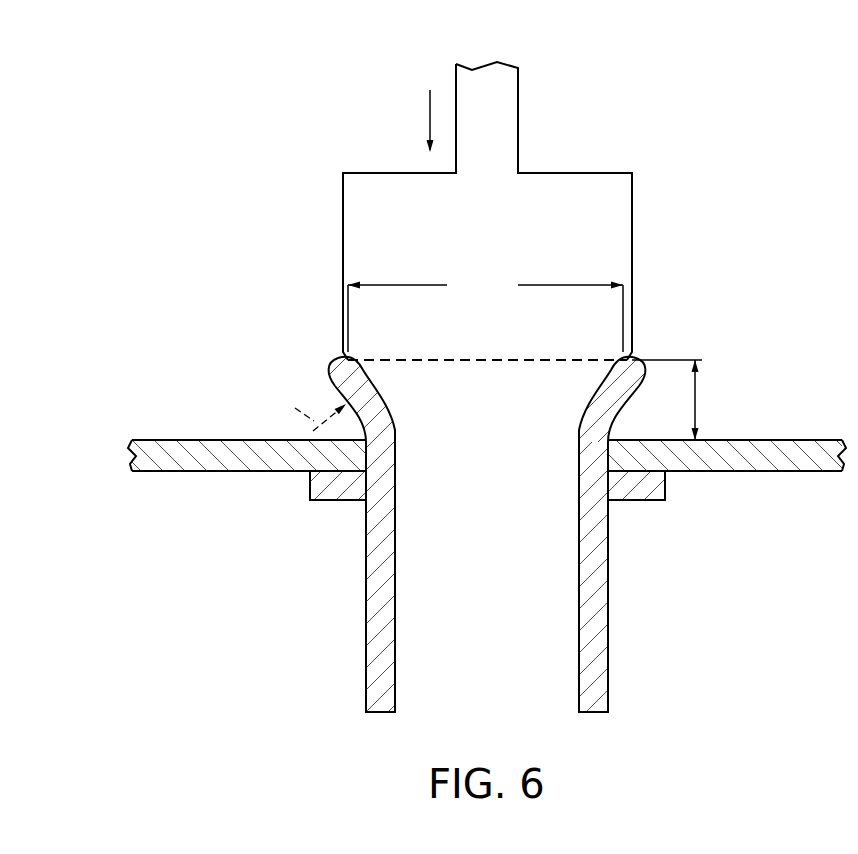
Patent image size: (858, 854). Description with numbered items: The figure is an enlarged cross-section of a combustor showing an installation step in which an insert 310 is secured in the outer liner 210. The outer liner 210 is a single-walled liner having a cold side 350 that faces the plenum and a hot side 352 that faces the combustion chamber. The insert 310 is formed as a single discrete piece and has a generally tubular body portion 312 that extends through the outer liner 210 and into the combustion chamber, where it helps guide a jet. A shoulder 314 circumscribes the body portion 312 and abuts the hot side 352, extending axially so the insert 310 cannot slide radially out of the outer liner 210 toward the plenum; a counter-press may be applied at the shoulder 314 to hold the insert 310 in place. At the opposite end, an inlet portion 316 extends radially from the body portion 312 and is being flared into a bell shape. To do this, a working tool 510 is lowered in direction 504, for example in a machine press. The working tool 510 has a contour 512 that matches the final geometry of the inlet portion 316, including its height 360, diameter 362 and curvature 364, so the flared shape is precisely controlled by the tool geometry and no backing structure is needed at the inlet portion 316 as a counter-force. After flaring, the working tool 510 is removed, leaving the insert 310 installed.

The outer liner 210 is at (142, 440).
The insert 310 is at (362, 620).
The body portion 312 is at (366, 568).
The shoulder 314 is at (310, 495).
The inlet portion 316 is at (331, 383).
The cold side 350 is at (210, 440).
The hot side 352 is at (208, 472).
The height 360 is at (702, 400).
The diameter 362 is at (485, 314).
The curvature 364 is at (294, 414).
The direction 504 is at (429, 118).
The working tool 510 is at (632, 243).
The contour 512 is at (603, 386).